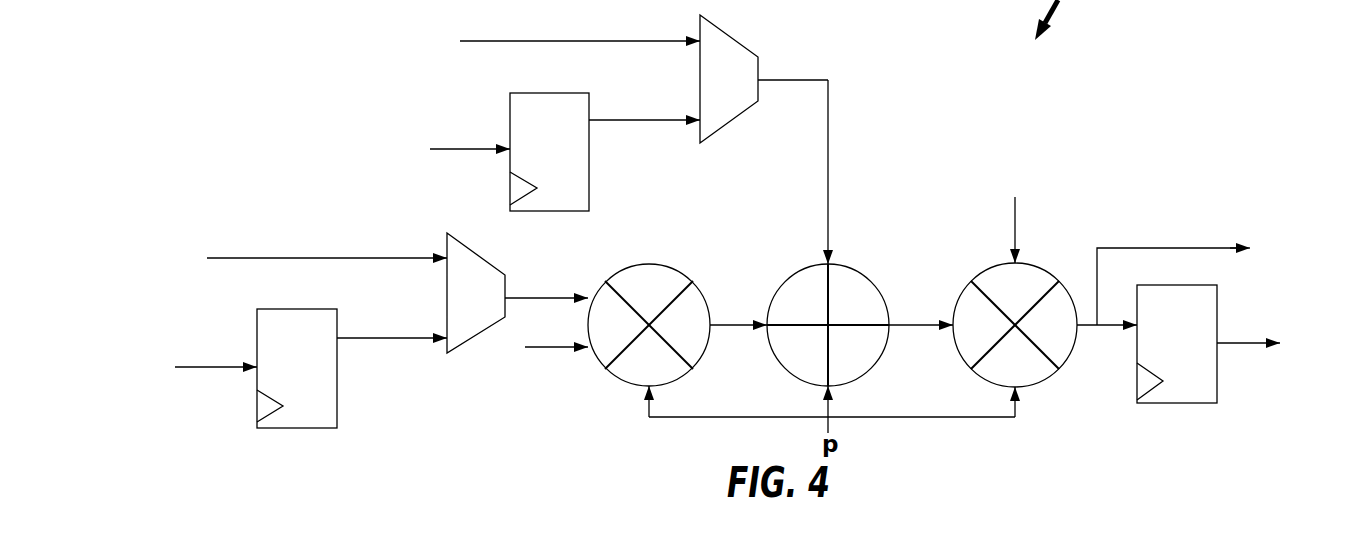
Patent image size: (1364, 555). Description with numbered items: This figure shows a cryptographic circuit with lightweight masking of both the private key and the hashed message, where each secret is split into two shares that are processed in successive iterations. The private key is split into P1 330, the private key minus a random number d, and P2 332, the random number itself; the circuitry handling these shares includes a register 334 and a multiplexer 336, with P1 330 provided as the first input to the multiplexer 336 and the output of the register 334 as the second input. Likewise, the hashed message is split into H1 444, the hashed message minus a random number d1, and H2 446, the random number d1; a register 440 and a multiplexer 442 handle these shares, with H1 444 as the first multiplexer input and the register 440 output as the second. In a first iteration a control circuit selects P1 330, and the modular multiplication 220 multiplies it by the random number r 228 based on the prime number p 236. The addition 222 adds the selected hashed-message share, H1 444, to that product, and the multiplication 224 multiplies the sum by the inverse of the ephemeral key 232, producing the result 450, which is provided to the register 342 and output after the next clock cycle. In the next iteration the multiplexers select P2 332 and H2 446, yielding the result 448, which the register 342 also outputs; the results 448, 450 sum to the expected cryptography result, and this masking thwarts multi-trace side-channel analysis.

The H1 444 is at (535, 41).
The register 440 is at (510, 133).
The multiplexer 442 is at (710, 133).
The H2 446 is at (463, 150).
The P1 330 is at (300, 258).
The P2 332 is at (222, 368).
The register 334 is at (285, 429).
The multiplexer 336 is at (447, 350).
The random number r 228 is at (548, 345).
The multiplication 220 is at (628, 262).
The addition 222 is at (800, 273).
The multiplication 224 is at (991, 263).
The inverse of the ephemeral key 232 is at (1013, 218).
The prime number p 236 is at (763, 417).
The result 448 is at (1198, 247).
The result 450 is at (1233, 345).
The register 342 is at (1175, 403).